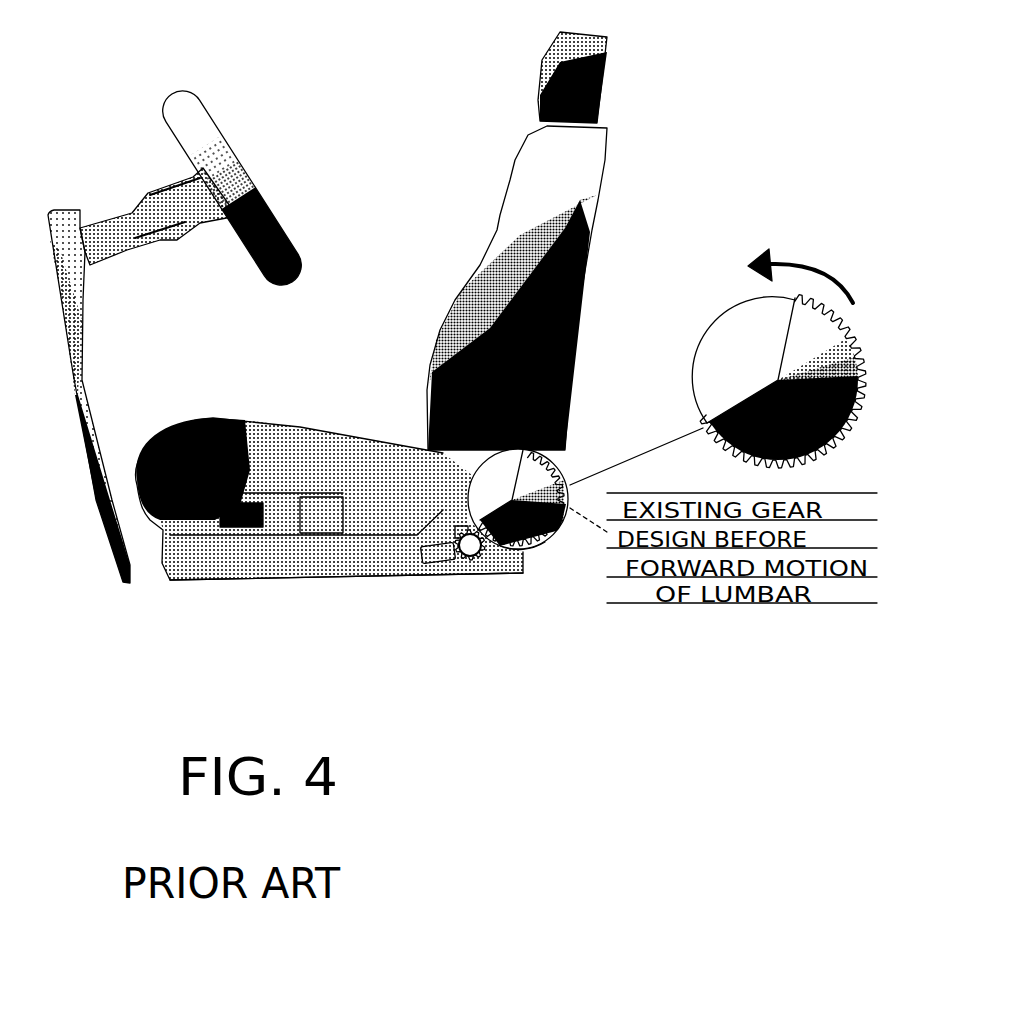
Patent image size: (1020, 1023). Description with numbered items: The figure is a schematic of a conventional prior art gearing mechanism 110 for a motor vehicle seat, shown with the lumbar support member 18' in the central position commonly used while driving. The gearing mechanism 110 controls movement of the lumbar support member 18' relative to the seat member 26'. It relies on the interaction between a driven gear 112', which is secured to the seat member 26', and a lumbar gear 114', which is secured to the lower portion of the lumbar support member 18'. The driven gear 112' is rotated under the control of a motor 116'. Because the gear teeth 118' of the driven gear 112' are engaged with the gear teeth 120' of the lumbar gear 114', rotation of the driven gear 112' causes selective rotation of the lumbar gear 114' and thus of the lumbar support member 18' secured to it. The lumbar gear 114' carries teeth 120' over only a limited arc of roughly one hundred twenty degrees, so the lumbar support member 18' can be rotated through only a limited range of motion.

The lumbar support member 18' is at (503, 241).
The seat member 26' is at (329, 461).
The gearing mechanism 110 is at (519, 592).
The driven gear 112' is at (474, 593).
The lumbar gear 114' is at (672, 397).
The motor 116' is at (409, 605).
The gear teeth of driven gear 118' is at (468, 461).
The gear teeth of lumbar gear 120' is at (556, 594).